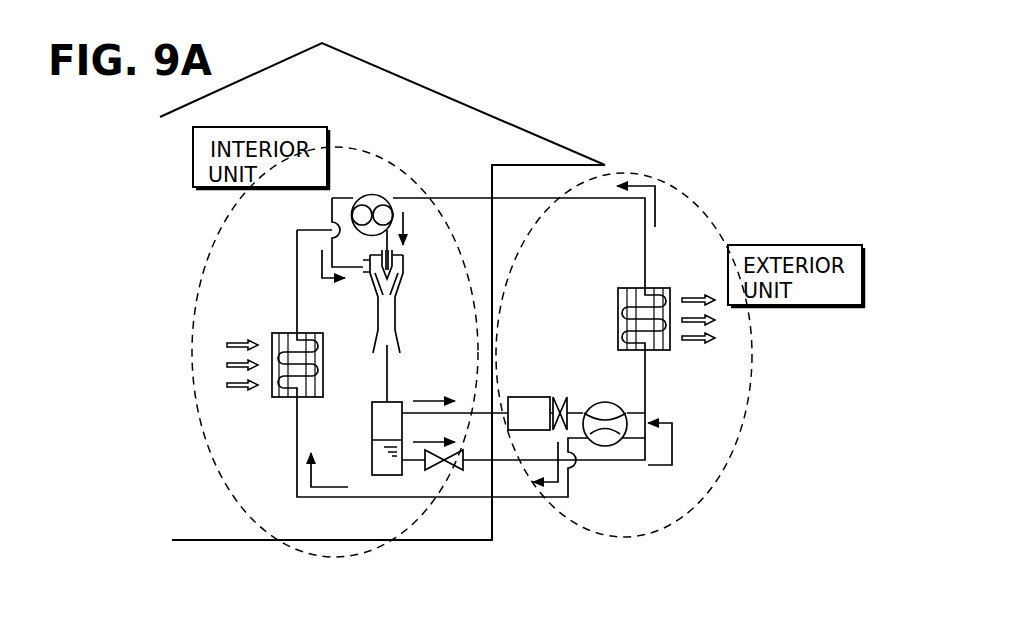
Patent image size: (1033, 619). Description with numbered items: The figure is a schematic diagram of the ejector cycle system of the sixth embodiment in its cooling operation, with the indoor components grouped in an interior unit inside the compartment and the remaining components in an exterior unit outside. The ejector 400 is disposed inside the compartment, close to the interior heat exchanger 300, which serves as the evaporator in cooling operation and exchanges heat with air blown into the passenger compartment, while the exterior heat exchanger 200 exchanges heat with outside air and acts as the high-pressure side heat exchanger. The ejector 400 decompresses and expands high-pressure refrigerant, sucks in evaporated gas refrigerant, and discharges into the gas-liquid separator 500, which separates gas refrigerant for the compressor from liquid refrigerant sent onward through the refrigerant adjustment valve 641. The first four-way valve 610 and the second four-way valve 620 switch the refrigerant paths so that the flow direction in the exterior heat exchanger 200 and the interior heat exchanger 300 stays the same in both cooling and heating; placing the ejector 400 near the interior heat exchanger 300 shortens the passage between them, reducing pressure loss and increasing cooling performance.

The exterior heat exchanger 200 is at (665, 350).
The interior heat exchanger 300 is at (284, 334).
The ejector 400 is at (388, 309).
The gas-liquid separator 500 is at (402, 475).
The first four-way valve 610 is at (605, 446).
The second four-way valve 620 is at (370, 195).
The refrigerant adjustment valve 641 is at (465, 466).